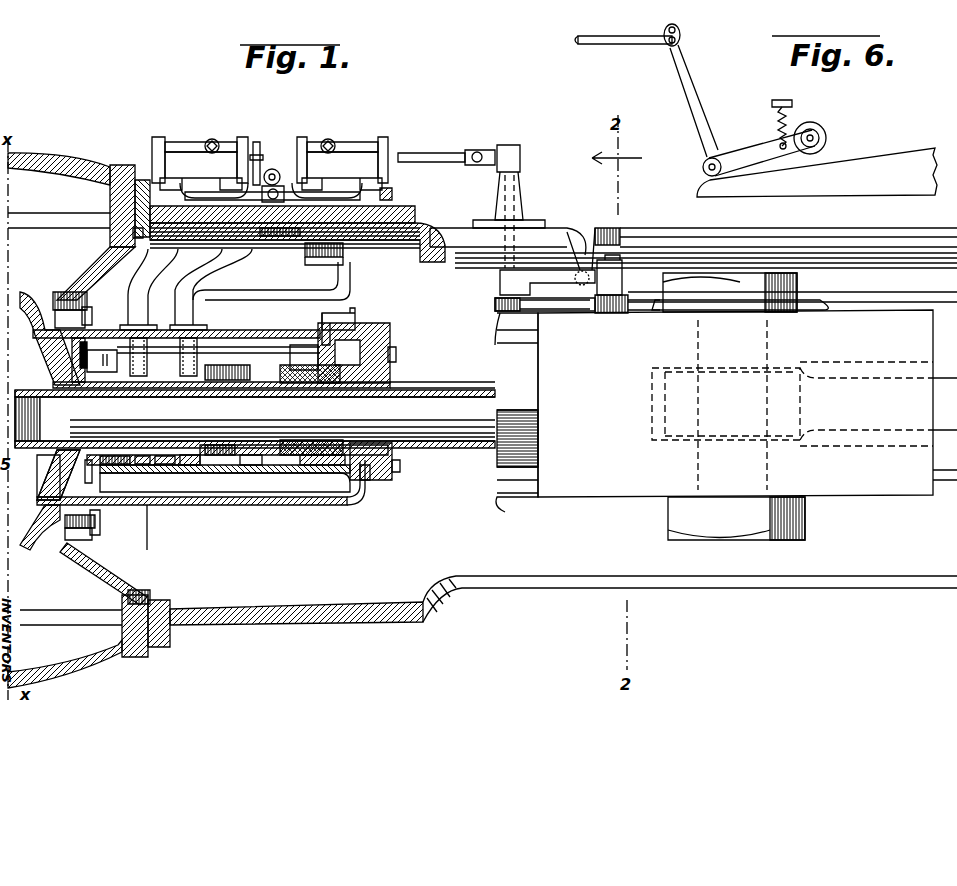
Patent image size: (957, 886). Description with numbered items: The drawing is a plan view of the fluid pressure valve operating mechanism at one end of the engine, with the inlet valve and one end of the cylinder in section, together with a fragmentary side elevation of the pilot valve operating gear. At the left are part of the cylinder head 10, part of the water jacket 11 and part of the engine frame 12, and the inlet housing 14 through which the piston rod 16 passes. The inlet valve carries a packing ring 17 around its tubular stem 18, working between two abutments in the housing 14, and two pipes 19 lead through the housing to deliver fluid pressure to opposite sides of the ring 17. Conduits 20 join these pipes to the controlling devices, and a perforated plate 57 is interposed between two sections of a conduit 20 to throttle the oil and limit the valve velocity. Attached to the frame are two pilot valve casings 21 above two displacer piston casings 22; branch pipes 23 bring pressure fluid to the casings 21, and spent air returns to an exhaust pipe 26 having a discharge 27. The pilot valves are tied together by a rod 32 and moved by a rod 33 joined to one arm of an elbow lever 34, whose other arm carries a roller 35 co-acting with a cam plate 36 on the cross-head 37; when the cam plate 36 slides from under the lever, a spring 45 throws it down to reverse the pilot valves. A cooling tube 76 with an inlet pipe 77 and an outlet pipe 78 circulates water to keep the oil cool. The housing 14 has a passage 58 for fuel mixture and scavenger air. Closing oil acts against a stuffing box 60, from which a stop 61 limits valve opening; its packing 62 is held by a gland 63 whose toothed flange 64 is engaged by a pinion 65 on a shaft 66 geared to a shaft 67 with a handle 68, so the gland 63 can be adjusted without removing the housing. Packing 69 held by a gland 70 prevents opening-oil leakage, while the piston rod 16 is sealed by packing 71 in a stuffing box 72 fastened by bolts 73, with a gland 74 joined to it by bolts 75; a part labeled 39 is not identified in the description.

In FIG. 1, the cylinder head 10 is at (18, 300).
In FIG. 1, the water jacket 11 is at (89, 420).
In FIG. 1, the engine frame 12 is at (553, 415).
In FIG. 1, the inlet housing 14 is at (208, 500).
In FIG. 1, the piston rod 16 is at (255, 419).
In FIG. 1, the packing ring 17 is at (114, 494).
In FIG. 1, the tubular stem 18 is at (185, 467).
In FIG. 1, the pipes 19 is at (163, 350).
In FIG. 1, the conduits 20 is at (238, 287).
In FIG. 1, the pilot valve casings 21 is at (271, 175).
In FIG. 1, the displacer piston casings 22 is at (172, 147).
In FIG. 1, the branch pipes 23 is at (292, 208).
In FIG. 1, the exhaust pipe 26 is at (275, 166).
In FIG. 1, the discharge 27 is at (288, 172).
In FIG. 1, the rod 32 is at (258, 150).
In FIG. 1, the rod 33 is at (441, 164).
In FIG. 6, the rod 33 is at (616, 45).
In FIG. 1, the elbow lever 34 is at (520, 195).
In FIG. 6, the elbow lever 34 is at (725, 137).
In FIG. 1, the roller 35 is at (608, 316).
In FIG. 6, the roller 35 is at (830, 137).
In FIG. 1, the cam plate 36 is at (578, 313).
In FIG. 6, the cam plate 36 is at (817, 172).
In FIG. 1, the cross-head 37 is at (747, 406).
In FIG. 1, the bearing ring 39 is at (227, 362).
In FIG. 6, the spring 45 is at (795, 110).
In FIG. 1, the perforated plate 57 is at (344, 250).
In FIG. 1, the passage 58 is at (242, 485).
In FIG. 1, the stuffing box 60 is at (140, 466).
In FIG. 1, the stop 61 is at (160, 466).
In FIG. 1, the packing 62 is at (115, 466).
In FIG. 1, the gland 63 is at (58, 476).
In FIG. 1, the peripherally toothed flange 64 is at (97, 485).
In FIG. 1, the pinion 65 is at (80, 355).
In FIG. 1, the shaft 66 is at (215, 348).
In FIG. 1, the shaft 67 is at (320, 326).
In FIG. 1, the handle 68 is at (356, 310).
In FIG. 1, the packing 69 is at (220, 457).
In FIG. 1, the gland 70 is at (248, 467).
In FIG. 1, the packing 71 is at (314, 467).
In FIG. 1, the stuffing box 72 is at (286, 467).
In FIG. 1, the bolts 73 is at (366, 482).
In FIG. 1, the gland 74 is at (394, 450).
In FIG. 1, the bolts 75 is at (400, 470).
In FIG. 1, the tube 76 is at (258, 224).
In FIG. 1, the inlet pipe 77 is at (388, 193).
In FIG. 1, the outlet pipe 78 is at (155, 190).